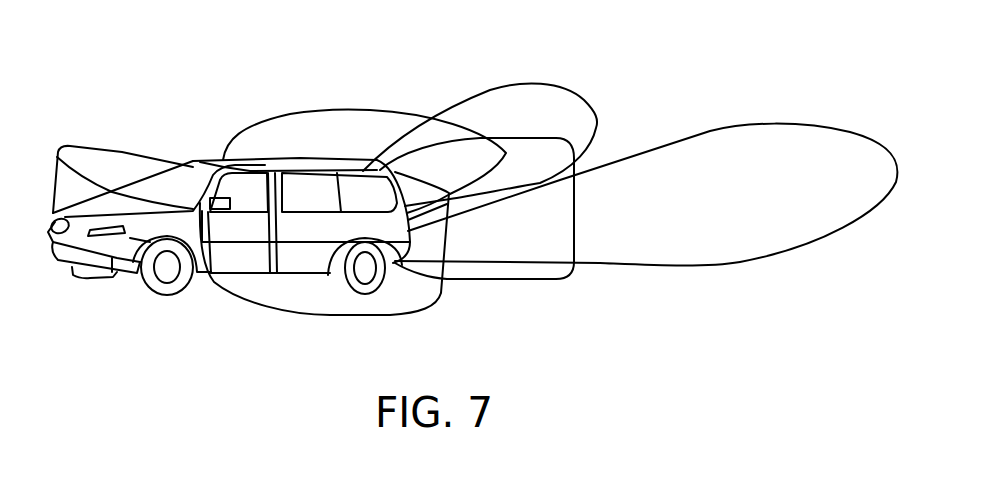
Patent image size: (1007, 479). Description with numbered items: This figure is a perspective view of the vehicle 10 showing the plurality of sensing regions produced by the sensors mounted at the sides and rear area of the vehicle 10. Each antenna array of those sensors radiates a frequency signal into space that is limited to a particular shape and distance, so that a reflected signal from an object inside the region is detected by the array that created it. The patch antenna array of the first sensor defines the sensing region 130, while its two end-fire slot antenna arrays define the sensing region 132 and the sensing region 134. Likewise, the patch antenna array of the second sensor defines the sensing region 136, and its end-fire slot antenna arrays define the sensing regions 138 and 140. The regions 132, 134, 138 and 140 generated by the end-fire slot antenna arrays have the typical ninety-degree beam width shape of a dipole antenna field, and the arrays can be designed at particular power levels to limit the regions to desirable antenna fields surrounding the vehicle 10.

The vehicle 10 is at (204, 146).
The sensing region 130 is at (768, 127).
The sensing region 132 is at (330, 110).
The sensing region 134 is at (314, 315).
The sensing region 136 is at (538, 83).
The sensing region 138 is at (498, 279).
The sensing region 140 is at (92, 146).